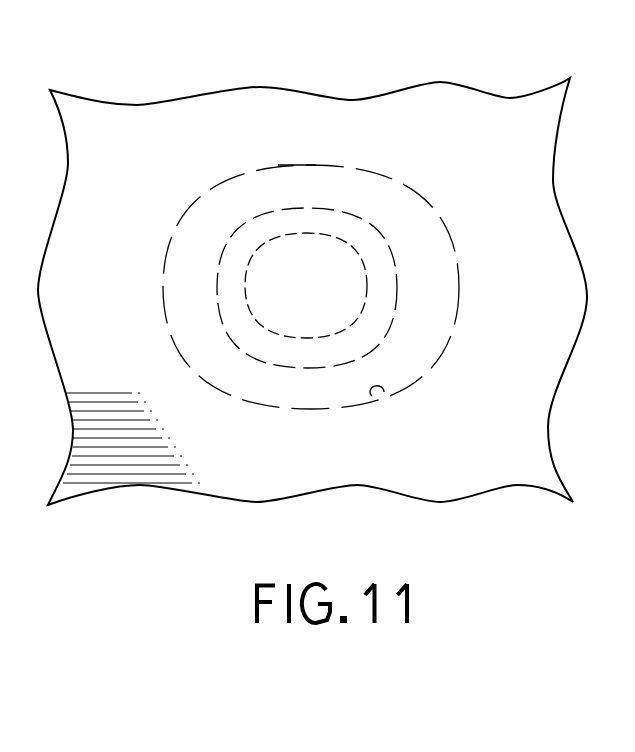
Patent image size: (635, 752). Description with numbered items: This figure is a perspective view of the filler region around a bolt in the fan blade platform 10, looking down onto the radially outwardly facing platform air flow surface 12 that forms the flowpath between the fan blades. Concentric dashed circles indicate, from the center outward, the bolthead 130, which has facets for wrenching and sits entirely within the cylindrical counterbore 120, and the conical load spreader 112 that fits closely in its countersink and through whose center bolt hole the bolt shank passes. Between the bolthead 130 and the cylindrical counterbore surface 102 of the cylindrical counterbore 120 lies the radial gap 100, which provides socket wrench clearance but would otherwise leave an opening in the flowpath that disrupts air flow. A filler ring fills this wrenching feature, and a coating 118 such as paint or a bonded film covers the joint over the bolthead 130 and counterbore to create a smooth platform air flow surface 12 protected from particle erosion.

The fan blade platform 10 is at (553, 393).
The platform air flow surface 12 is at (445, 110).
The coating 118 is at (120, 130).
The radial gap 100 is at (427, 218).
The forward conical load spreader 112 is at (282, 182).
The cylindrical counterbore 120 is at (393, 306).
The bolthead 130 is at (305, 263).
The cylindrical counterbore surface 102 is at (380, 400).